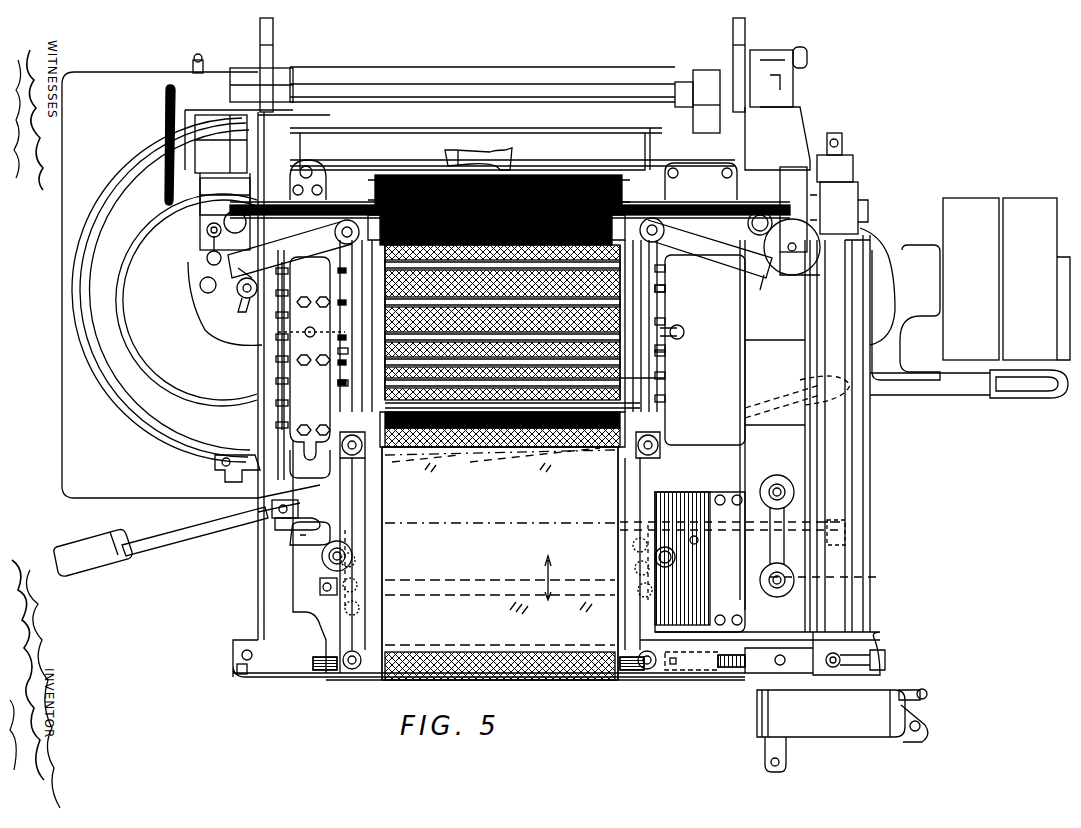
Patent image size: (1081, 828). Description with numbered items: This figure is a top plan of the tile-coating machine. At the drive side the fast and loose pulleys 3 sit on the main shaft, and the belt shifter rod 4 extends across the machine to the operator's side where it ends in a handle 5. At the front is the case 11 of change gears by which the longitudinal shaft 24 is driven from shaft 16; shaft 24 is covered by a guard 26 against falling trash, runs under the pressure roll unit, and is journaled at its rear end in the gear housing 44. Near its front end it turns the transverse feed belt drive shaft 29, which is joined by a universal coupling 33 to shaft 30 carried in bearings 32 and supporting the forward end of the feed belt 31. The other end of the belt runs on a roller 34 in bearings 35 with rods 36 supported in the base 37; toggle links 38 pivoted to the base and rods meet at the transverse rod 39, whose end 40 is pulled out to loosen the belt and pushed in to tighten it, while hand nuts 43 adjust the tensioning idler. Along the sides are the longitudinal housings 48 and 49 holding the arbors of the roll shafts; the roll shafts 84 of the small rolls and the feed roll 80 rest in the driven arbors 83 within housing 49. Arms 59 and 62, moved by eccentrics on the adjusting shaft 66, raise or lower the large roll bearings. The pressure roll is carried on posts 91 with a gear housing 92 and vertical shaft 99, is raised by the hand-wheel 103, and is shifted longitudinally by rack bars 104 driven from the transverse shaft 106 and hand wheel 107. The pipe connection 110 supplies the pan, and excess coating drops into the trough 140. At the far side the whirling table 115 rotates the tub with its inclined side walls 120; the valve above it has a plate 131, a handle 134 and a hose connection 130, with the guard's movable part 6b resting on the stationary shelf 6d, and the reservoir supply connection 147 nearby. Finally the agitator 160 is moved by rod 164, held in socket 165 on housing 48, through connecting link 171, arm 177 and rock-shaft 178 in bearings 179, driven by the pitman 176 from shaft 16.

The fast and loose pulleys 3 is at (1010, 208).
The rod 4 is at (135, 538).
The handle 5 is at (93, 559).
The movable part of guard 6b is at (82, 222).
The stationary shelf 6d is at (160, 285).
The case 11 is at (842, 730).
The shaft 16 is at (838, 534).
The longitudinal shaft 24 is at (836, 132).
The guard 26 is at (838, 482).
The feed belt drive shaft 29 is at (740, 670).
The shaft 30 is at (322, 672).
The feed belt 31 is at (566, 630).
The bearings 32 is at (350, 672).
The universal coupling 33 is at (700, 672).
The roller 34 is at (492, 464).
The bearings 35 is at (346, 432).
The rods 36 is at (366, 476).
The base 37 is at (700, 562).
The toggle links 38 is at (360, 590).
The transverse rod 39 is at (472, 590).
The rod end 40 is at (320, 590).
The hand nuts 43 is at (352, 556).
The gear housing 44 is at (878, 196).
The longitudinal housing 48 is at (732, 310).
The housing 49 is at (310, 358).
The supporting arm 59 is at (697, 78).
The arm 62 is at (310, 78).
The adjusting shaft 66 is at (380, 95).
The feed roll 80 is at (488, 418).
The arbors 83 is at (338, 383).
The roll shafts 84 is at (650, 292).
The posts 91 is at (223, 224).
The gear housing 92 is at (805, 192).
The vertical shaft 99 is at (868, 230).
The hand-wheel 103 is at (207, 258).
The rack bar 104 is at (273, 30).
The transverse shaft 106 is at (212, 140).
The hand wheel 107 is at (169, 86).
The pipe connection 110 is at (482, 150).
The whirling table 115 is at (104, 328).
The inclined side walls 120 is at (186, 300).
The hose connection 130 is at (200, 280).
The plate 131 is at (214, 320).
The handle 134 is at (236, 290).
The trough 140 is at (566, 128).
The supply connection 147 is at (363, 151).
The agitator 160 is at (645, 380).
The rod 164 is at (338, 351).
The socket 165 is at (660, 328).
The connecting link 171 is at (311, 323).
The pitman 176 is at (758, 520).
The arm 177 is at (292, 510).
The rock-shaft 178 is at (280, 442).
The bearings 179 is at (272, 505).